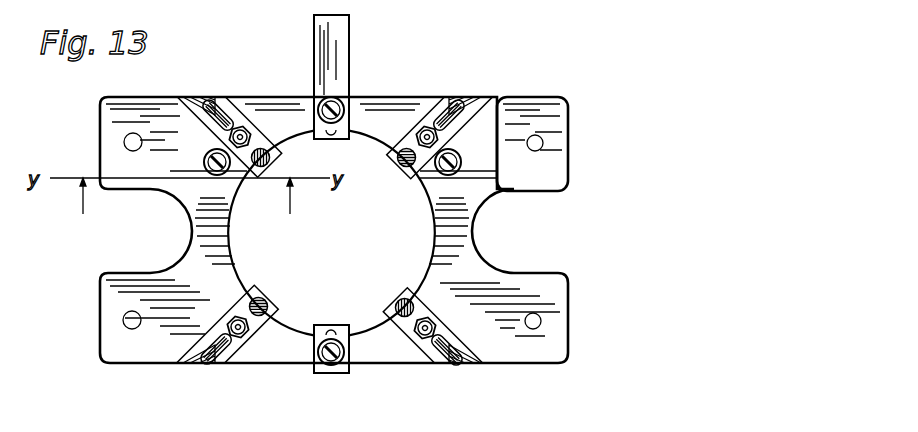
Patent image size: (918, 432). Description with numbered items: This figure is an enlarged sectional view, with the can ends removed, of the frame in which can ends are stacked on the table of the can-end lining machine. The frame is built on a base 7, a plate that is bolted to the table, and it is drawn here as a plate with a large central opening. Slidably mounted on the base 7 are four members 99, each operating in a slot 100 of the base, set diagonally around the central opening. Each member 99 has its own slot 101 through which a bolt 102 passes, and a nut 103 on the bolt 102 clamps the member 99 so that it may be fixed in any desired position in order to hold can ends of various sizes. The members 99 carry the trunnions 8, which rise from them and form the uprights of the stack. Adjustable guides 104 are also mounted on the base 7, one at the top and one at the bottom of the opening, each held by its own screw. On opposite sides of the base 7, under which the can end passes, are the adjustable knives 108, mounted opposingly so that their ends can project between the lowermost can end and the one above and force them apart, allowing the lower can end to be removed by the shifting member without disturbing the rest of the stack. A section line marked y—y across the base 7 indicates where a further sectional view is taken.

The base 7 is at (463, 258).
The trunnions 8 is at (272, 160).
The members 99 is at (226, 112).
The slots 100 is at (204, 100).
The slots 101 is at (440, 110).
The bolts 102 is at (422, 342).
The nuts 103 is at (237, 316).
The adjustable guides 104 is at (314, 23).
The adjustable knives 108 is at (473, 173).